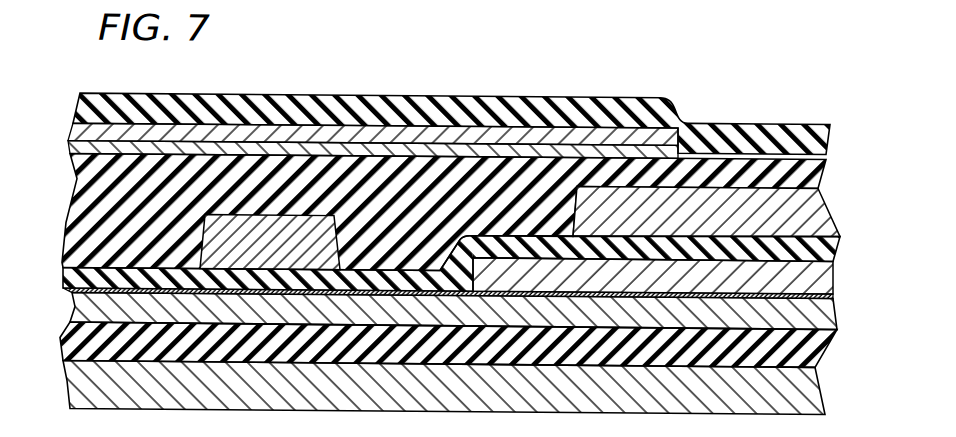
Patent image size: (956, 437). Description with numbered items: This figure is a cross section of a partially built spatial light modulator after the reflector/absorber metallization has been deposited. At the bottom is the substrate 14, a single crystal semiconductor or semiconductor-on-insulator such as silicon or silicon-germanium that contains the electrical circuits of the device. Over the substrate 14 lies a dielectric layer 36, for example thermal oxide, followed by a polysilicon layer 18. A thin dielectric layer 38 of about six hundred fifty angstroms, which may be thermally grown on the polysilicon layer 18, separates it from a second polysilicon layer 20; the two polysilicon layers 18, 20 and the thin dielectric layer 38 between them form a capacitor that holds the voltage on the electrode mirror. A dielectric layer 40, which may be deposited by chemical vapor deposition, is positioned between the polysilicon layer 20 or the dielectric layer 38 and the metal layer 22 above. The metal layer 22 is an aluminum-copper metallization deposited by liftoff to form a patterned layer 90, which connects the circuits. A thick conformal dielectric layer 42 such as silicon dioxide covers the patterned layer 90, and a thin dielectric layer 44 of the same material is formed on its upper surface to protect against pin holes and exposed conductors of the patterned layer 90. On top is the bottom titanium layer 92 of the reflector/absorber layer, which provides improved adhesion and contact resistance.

The substrate 14 is at (87, 377).
The polysilicon layer 18 is at (823, 316).
The polysilicon layer 20 is at (812, 272).
The metal layer 22 is at (449, 213).
The dielectric layer 36 is at (82, 332).
The thin dielectric layer 38 is at (72, 288).
The dielectric layer 40 is at (838, 246).
The dielectric layer 42 is at (84, 229).
The dielectric layer 44 is at (435, 110).
The patterned layer 90 is at (222, 240).
The bottom Ti layer 92 is at (73, 133).